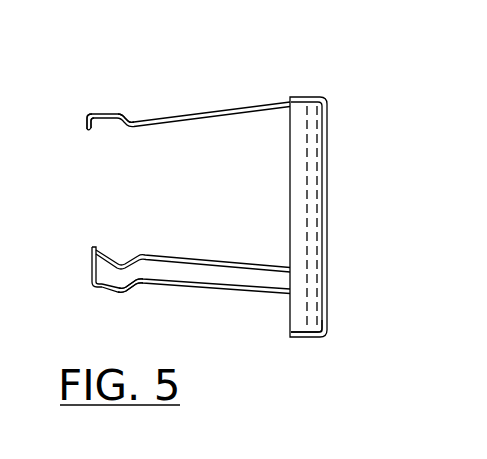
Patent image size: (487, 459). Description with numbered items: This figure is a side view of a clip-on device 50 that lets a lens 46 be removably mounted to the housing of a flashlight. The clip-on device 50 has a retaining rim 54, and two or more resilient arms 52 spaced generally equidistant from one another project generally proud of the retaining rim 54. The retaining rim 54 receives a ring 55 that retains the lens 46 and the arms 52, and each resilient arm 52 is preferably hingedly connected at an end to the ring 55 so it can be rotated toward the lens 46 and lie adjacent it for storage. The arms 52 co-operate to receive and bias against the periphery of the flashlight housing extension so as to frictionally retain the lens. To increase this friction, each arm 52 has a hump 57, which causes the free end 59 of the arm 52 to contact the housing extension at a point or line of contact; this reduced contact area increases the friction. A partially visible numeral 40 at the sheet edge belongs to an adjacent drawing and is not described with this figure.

The clip-on device 50 is at (211, 211).
The resilient arm 52 is at (108, 114).
The hump 57 is at (126, 113).
The free end 59 is at (87, 129).
The ring 55 is at (330, 182).
The lens 46 is at (303, 171).
The retaining rim 54 is at (296, 331).
The housing 40 is at (0, 455).